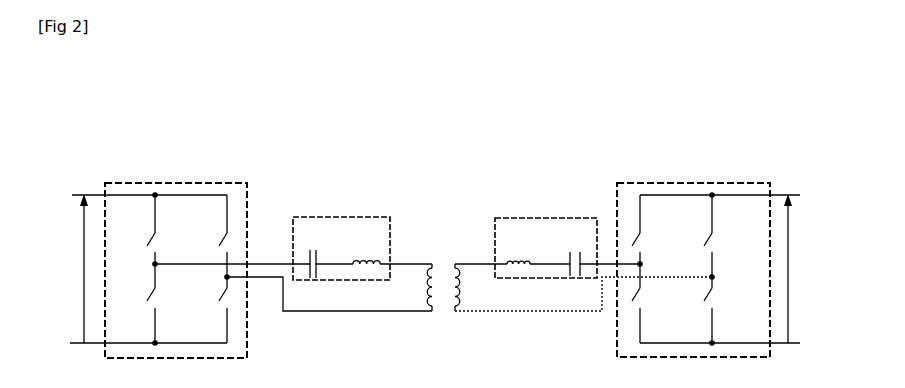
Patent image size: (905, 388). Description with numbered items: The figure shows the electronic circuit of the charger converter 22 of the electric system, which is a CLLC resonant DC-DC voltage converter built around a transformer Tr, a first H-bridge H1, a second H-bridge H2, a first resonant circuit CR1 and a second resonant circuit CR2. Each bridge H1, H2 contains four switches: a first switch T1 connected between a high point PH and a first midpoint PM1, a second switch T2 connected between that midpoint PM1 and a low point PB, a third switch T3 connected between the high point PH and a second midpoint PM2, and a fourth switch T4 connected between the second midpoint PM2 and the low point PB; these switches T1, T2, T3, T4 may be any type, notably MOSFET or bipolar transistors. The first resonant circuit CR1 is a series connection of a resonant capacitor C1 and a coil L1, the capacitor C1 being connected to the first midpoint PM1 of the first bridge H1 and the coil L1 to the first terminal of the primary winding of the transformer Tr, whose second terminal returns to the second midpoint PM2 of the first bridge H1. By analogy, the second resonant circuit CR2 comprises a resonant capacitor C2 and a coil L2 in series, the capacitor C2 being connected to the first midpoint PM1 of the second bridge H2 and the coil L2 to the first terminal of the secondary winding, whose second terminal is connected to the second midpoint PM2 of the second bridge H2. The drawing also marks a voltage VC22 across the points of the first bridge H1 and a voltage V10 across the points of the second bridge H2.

The converter 22 is at (146, 118).
The first H-bridge H1 is at (189, 183).
The second H-bridge H2 is at (679, 183).
The first resonant circuit CR1 is at (341, 233).
The second resonant circuit CR2 is at (546, 232).
The transformer Tr is at (453, 287).
The resonant capacitor C1 is at (328, 256).
The coil L1 is at (366, 248).
The coil L2 is at (518, 247).
The resonant capacitor C2 is at (573, 252).
The first switch T1 is at (391, 229).
The second switch T2 is at (396, 303).
The third switch T3 is at (466, 236).
The fourth switch T4 is at (468, 310).
The high point PH is at (423, 204).
The low point PB is at (433, 337).
The first midpoint PM1 is at (392, 267).
The second midpoint PM2 is at (464, 281).
The bus voltage VC22 is at (65, 268).
The battery voltage V10 is at (808, 268).